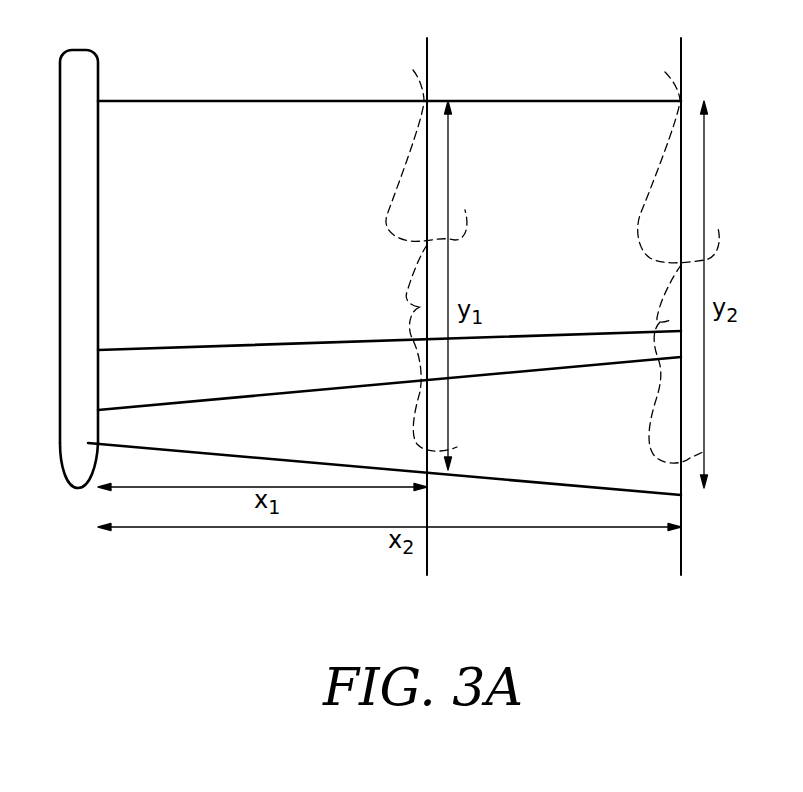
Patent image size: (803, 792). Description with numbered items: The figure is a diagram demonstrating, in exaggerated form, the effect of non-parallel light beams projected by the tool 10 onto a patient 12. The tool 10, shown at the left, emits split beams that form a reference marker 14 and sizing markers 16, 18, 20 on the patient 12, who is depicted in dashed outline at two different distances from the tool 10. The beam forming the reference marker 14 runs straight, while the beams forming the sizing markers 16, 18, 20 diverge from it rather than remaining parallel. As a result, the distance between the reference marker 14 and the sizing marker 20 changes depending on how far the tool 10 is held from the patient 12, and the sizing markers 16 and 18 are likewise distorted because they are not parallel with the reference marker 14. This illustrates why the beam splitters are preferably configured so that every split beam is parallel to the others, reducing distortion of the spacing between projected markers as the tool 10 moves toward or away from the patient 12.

The tool 10 is at (60, 323).
The patient 12 is at (414, 73).
The reference marker 14 is at (223, 101).
The sizing marker 16 is at (188, 346).
The sizing marker 18 is at (193, 400).
The sizing marker 20 is at (230, 455).